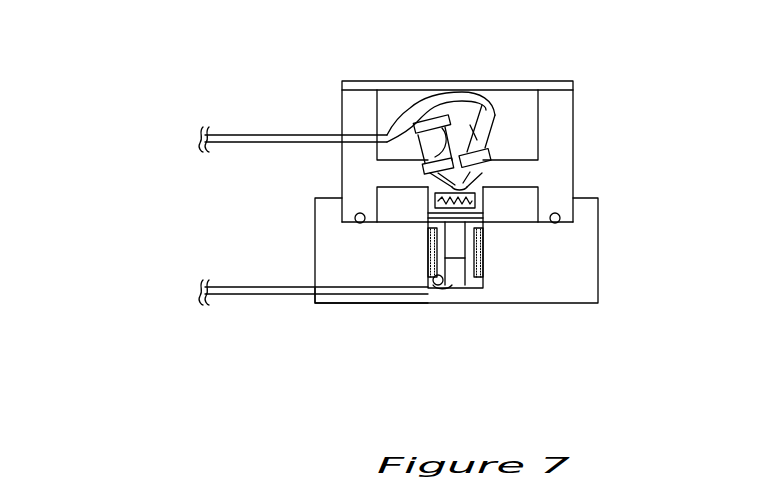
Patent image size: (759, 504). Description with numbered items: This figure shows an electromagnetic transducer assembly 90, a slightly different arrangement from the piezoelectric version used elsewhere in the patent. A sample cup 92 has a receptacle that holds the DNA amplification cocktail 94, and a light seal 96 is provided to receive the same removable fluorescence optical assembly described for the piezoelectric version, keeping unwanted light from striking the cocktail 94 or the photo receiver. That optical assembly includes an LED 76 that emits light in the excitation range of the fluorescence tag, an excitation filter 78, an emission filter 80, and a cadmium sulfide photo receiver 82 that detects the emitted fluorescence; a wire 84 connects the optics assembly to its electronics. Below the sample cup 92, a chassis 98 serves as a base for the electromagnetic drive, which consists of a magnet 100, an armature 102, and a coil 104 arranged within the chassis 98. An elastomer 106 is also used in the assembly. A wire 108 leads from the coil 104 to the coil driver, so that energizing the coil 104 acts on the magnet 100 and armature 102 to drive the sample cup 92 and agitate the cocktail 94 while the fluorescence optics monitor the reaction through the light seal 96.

The LED 76 is at (437, 135).
The excitation filter 78 is at (423, 160).
The emission filter 80 is at (493, 163).
The cadmium sulfide photo receiver 82 is at (490, 150).
The wire 84 is at (283, 135).
The electromagnetic transducer assembly 90 is at (632, 60).
The sample cup 92 is at (483, 203).
The cocktail 94 is at (484, 190).
The light seal 96 is at (355, 215).
The chassis 98 is at (325, 262).
The magnet 100 is at (455, 265).
The armature 102 is at (483, 250).
The coil 104 is at (485, 258).
The elastomer 106 is at (442, 222).
The wire 108 is at (255, 295).